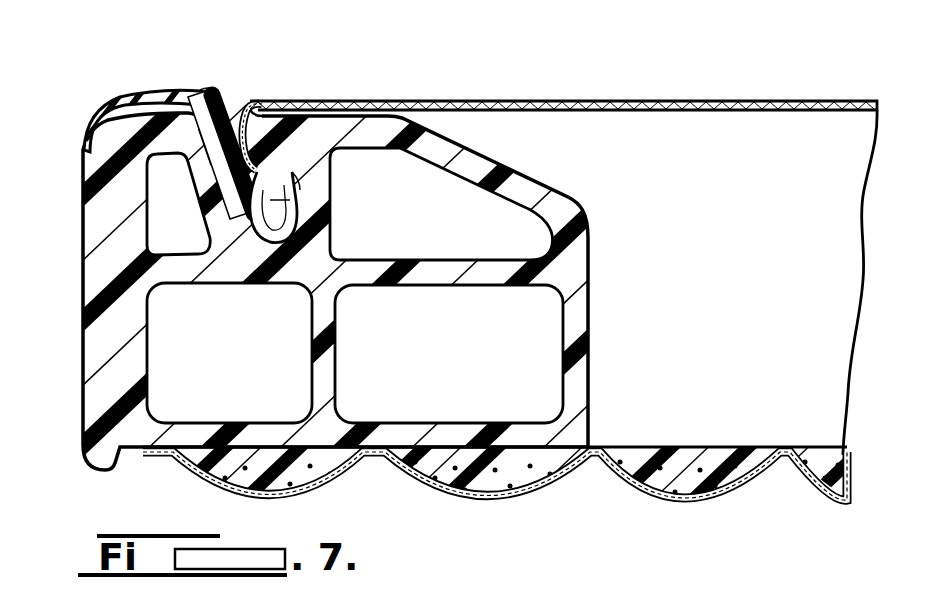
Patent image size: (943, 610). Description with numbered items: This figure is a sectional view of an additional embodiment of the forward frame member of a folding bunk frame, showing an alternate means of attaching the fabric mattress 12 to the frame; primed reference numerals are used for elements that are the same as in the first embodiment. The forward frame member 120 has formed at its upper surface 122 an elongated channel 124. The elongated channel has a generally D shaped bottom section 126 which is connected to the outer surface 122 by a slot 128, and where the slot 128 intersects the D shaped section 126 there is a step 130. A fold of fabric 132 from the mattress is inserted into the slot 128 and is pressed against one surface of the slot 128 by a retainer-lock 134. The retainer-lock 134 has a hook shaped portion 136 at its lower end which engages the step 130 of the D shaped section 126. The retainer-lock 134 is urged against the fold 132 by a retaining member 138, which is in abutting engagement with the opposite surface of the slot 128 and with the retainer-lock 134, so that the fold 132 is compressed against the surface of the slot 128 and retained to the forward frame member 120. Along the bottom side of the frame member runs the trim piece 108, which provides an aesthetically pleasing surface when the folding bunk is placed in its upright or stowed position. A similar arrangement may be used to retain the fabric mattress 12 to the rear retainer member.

The fabric mattress 12 is at (590, 102).
The trim piece 108 is at (688, 473).
The forward frame member 120 is at (98, 265).
The upper surface 122 is at (133, 100).
The elongated channel 124 is at (299, 188).
The D shaped bottom section 126 is at (283, 223).
The slot 128 is at (205, 96).
The step 130 is at (327, 116).
The fold of fabric 132 is at (273, 133).
The retainer-lock 134 is at (247, 112).
The hook shaped portion 136 is at (273, 198).
The retaining member 138 is at (207, 92).